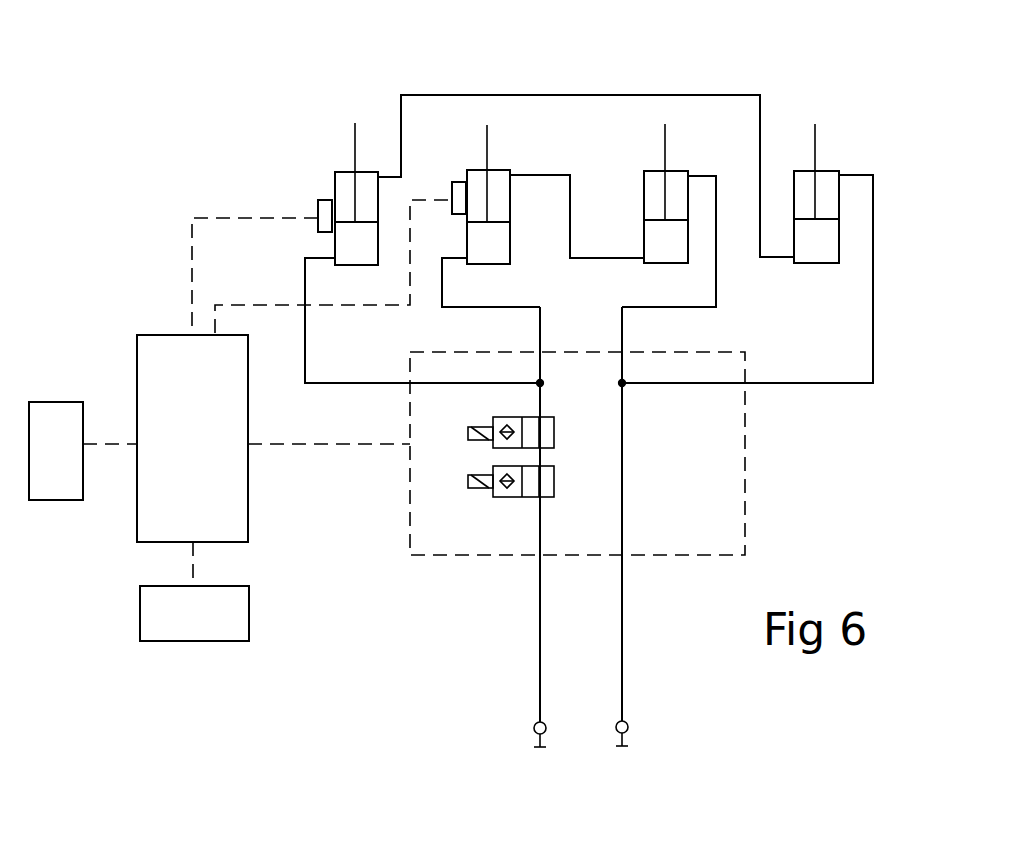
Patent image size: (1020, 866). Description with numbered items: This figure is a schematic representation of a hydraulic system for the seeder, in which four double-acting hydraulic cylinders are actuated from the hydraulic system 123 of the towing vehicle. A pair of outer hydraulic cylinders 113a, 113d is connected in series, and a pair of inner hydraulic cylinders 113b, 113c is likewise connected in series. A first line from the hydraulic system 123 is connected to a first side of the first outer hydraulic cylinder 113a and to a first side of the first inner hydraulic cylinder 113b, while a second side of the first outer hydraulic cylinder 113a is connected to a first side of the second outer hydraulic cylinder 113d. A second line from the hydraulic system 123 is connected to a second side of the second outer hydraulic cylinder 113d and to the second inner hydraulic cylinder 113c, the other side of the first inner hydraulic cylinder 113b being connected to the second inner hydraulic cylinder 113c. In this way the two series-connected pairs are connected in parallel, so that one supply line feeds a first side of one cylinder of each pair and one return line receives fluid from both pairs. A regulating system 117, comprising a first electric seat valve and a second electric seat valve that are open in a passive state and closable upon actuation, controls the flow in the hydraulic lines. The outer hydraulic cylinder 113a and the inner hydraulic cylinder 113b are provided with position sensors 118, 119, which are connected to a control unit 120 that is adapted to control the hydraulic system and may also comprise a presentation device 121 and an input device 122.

The first outer hydraulic cylinder 113a is at (335, 248).
The first inner hydraulic cylinder 113b is at (497, 170).
The second inner hydraulic cylinder 113c is at (718, 152).
The second outer hydraulic cylinder 113d is at (827, 170).
The regulating system 117 is at (783, 490).
The position sensor 118 is at (318, 215).
The position sensor 119 is at (452, 182).
The control unit 120 is at (216, 452).
The presentation device 121 is at (80, 467).
The input device 122 is at (217, 626).
The hydraulic system of the towing vehicle 123 is at (647, 699).